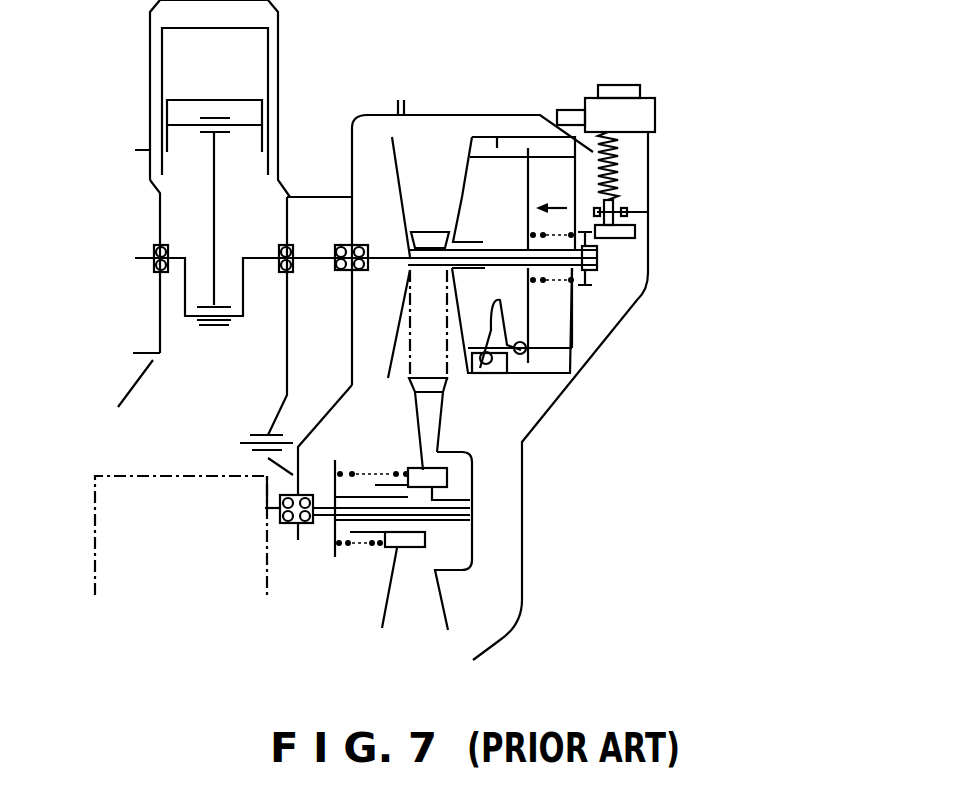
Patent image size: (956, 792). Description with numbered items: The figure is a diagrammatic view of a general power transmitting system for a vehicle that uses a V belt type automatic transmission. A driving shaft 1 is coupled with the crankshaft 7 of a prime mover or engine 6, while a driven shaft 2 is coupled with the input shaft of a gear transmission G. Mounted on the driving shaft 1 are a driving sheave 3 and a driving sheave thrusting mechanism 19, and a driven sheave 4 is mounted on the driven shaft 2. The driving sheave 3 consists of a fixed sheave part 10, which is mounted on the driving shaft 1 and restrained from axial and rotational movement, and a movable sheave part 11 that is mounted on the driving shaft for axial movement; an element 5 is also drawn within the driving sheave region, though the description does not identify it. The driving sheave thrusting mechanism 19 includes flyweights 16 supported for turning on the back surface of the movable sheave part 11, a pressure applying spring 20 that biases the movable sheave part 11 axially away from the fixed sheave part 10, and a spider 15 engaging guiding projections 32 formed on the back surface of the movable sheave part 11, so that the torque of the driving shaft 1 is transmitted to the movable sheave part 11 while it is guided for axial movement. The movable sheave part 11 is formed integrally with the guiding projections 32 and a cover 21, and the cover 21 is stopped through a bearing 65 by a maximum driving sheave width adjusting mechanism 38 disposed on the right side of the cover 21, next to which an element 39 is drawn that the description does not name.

The driving shaft 1 is at (412, 268).
The driven shaft 2 is at (327, 530).
The driving sheave 3 is at (445, 138).
The driven sheave 4 is at (417, 622).
The valve 5 is at (428, 232).
The prime mover (engine) 6 is at (132, 80).
The crankshaft 7 is at (262, 250).
The fixed sheave part 10 is at (390, 157).
The movable sheave part 11 is at (470, 194).
The spider 15 is at (525, 245).
The flyweights 16 is at (500, 363).
The driving sheave thrusting mechanism 19 is at (519, 388).
The pressure applying spring 20 is at (577, 286).
The cover 21 is at (577, 330).
The guiding projections 32 is at (495, 145).
The maximum driving sheave width adjusting mechanism 38 is at (632, 196).
The plate 39 is at (620, 235).
The bearing 65 is at (592, 285).
The gear transmission G is at (192, 554).